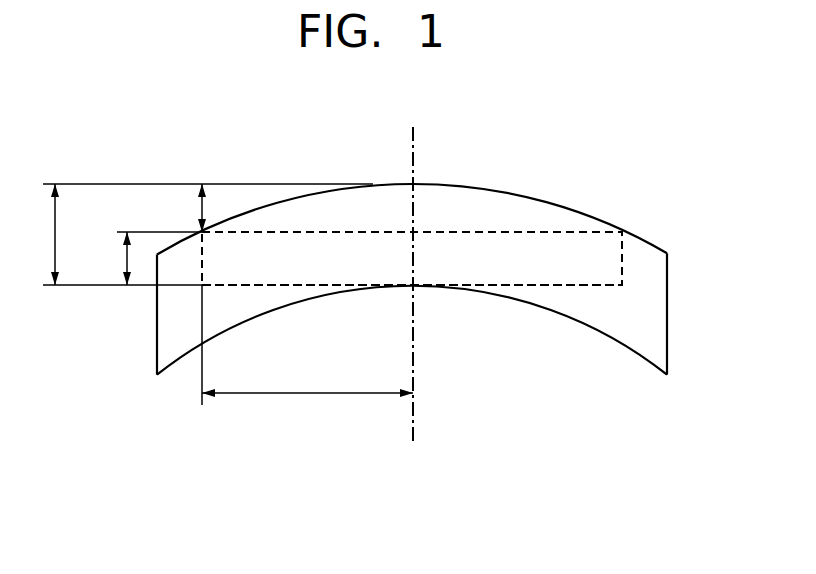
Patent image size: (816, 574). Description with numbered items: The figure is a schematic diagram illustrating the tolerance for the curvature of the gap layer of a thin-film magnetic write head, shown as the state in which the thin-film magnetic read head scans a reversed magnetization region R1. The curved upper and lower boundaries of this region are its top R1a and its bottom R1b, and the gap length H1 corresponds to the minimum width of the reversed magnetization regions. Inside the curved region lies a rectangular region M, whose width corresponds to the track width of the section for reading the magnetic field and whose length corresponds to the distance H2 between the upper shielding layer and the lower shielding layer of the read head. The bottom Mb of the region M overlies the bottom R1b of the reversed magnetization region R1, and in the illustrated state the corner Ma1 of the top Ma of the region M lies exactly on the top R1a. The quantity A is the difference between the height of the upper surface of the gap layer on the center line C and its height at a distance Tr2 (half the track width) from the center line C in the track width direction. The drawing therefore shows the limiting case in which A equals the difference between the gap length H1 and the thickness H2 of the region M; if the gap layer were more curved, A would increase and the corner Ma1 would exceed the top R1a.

The top of reversed magnetization region R1a is at (495, 176).
The bottom of reversed magnetization region R1b is at (467, 303).
The reversed magnetization region R1 is at (667, 316).
The center line C is at (414, 305).
The region M is at (572, 232).
The top of region M Ma is at (350, 220).
The bottom of region M Mb is at (224, 298).
The corner of top of region M Ma1 is at (202, 232).
The gap length H1 is at (37, 234).
The distance between upper and lower shielding layers H2 is at (108, 258).
The curvature difference A is at (212, 208).
The half track width Tr/2 Tr2 is at (307, 416).